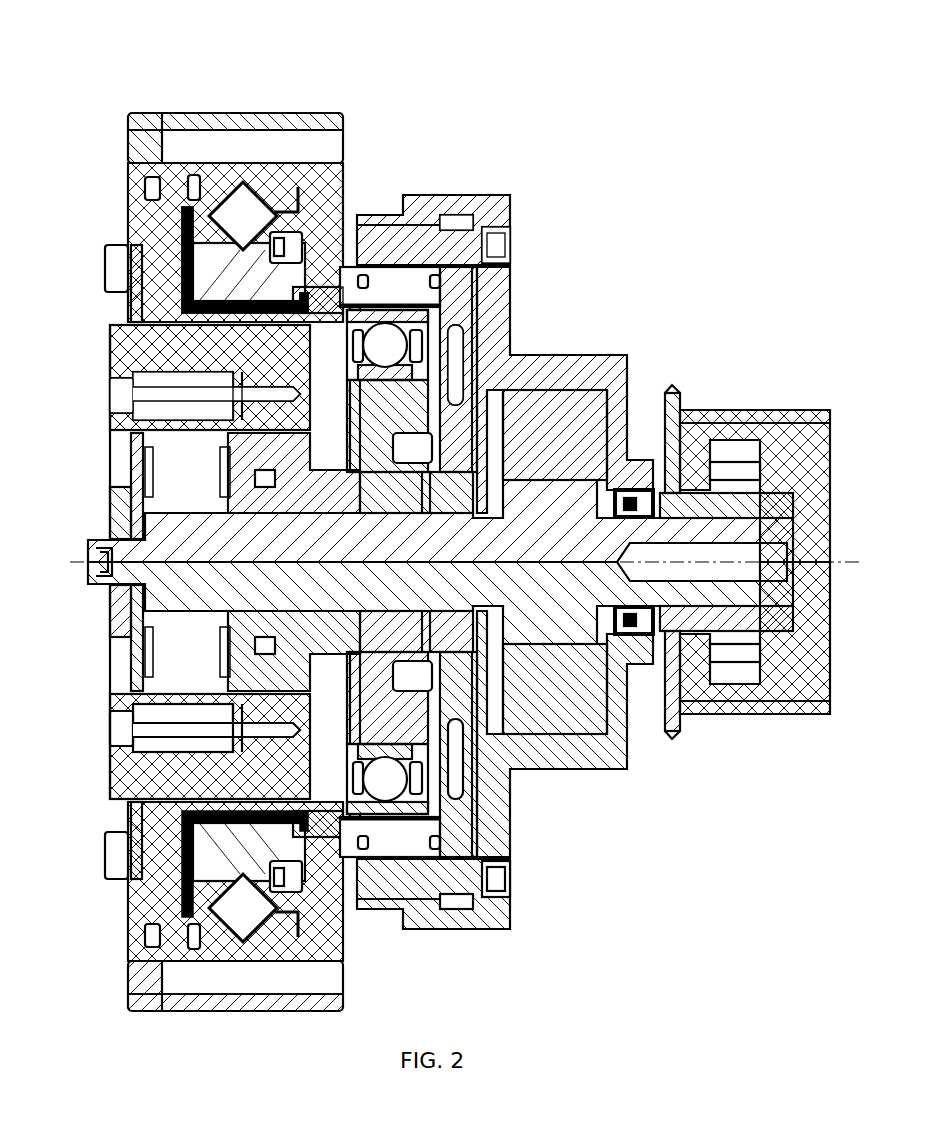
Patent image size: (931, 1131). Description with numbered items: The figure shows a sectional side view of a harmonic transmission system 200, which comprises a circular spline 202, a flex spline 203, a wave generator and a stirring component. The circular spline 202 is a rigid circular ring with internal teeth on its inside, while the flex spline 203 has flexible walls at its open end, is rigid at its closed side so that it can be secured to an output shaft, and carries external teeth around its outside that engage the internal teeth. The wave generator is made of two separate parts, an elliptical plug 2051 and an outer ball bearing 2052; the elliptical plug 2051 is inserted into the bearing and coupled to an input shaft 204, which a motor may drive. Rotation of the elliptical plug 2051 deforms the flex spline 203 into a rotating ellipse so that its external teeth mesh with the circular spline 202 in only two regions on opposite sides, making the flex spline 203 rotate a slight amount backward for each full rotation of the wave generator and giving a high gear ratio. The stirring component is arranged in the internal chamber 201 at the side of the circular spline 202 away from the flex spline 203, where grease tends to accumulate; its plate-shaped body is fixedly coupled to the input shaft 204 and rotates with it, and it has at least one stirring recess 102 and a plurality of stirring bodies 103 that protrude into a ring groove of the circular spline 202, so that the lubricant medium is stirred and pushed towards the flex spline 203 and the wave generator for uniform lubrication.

The harmonic transmission system 200 is at (260, 58).
The outer ball bearing 2052 is at (292, 300).
The elliptical plug 2051 is at (234, 415).
The input shaft 204 is at (132, 548).
The flex spline 203 is at (318, 298).
The circular spline 202 is at (386, 212).
The internal chamber 201 is at (456, 303).
The stirring recess 102 is at (443, 380).
The stirring body 103 is at (457, 402).